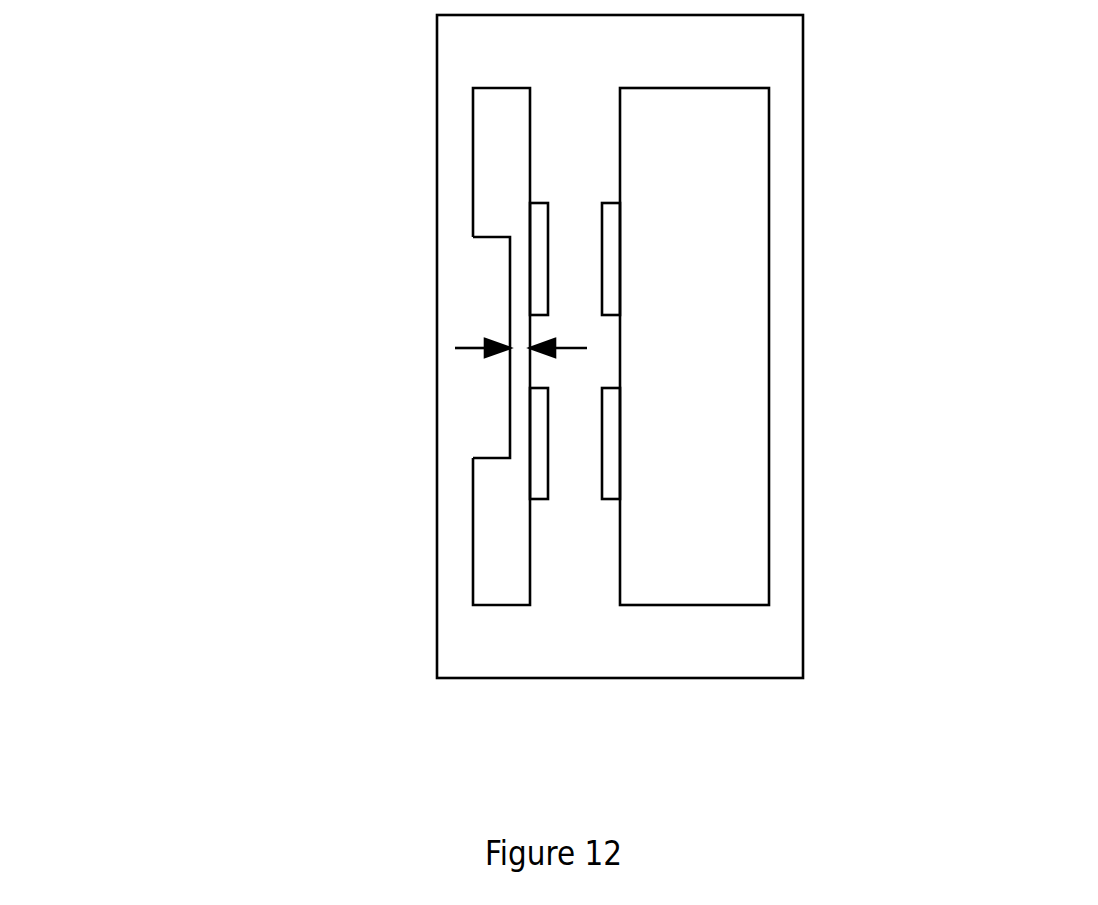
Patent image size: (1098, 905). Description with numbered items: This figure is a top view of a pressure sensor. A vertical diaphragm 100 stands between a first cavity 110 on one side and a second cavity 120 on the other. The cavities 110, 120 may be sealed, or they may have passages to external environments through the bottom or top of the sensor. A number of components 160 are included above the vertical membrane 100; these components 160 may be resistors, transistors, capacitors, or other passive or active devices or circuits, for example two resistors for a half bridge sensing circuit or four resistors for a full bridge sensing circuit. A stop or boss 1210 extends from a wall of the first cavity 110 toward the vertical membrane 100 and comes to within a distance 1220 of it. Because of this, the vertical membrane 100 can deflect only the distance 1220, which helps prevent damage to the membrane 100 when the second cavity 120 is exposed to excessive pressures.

The vertical diaphragm 100 is at (575, 419).
The first cavity 110 is at (492, 163).
The second cavity 120 is at (730, 310).
The components 160 is at (610, 443).
The stop or boss 1210 is at (492, 310).
The distance 1220 is at (520, 355).